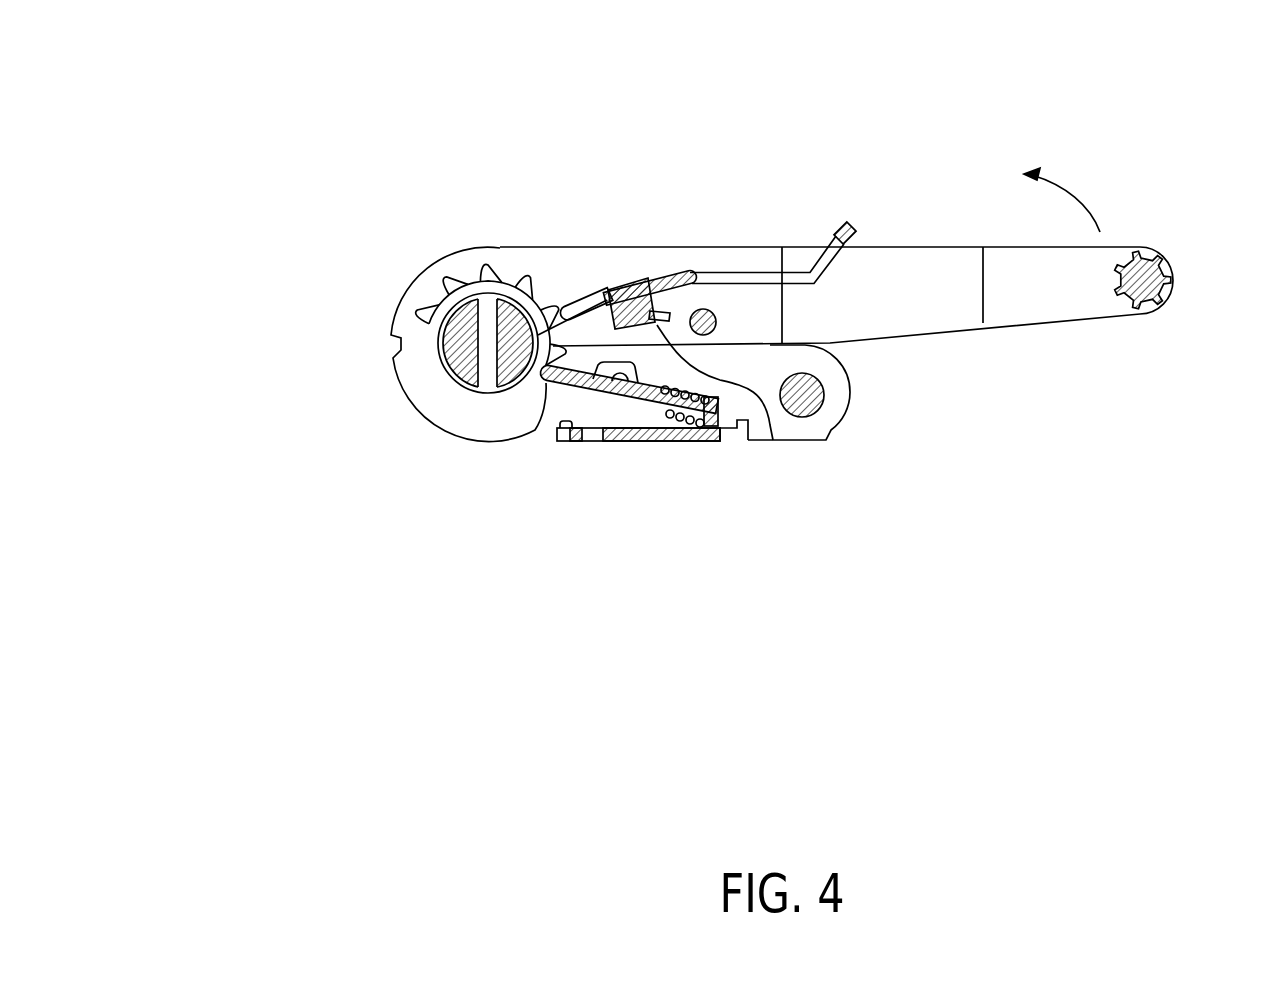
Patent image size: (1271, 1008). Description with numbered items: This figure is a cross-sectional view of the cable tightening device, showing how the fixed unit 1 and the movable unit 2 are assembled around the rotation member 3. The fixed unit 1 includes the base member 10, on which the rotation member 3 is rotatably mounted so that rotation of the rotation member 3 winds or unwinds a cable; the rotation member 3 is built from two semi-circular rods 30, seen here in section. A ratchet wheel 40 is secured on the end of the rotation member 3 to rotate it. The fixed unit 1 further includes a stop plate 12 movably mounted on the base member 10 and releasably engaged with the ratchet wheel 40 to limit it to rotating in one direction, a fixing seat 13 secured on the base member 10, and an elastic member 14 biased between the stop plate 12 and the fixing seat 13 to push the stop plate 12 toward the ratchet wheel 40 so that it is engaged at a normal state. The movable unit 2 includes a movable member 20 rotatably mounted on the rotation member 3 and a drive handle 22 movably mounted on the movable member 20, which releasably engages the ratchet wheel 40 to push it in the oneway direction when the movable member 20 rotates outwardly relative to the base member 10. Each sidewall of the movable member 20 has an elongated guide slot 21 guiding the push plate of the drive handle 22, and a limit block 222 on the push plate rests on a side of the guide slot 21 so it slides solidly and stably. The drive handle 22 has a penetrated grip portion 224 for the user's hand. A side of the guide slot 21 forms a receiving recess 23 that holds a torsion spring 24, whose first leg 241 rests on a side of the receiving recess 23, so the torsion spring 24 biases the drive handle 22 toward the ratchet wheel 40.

The fixed unit 1 is at (852, 413).
The base member 10 is at (833, 438).
The stop plate 12 is at (612, 379).
The fixing seat 13 is at (717, 443).
The elastic member 14 is at (647, 430).
The movable unit 2 is at (1170, 247).
The movable member 20 is at (1138, 315).
The guide slot 21 is at (545, 381).
The drive handle 22 is at (672, 272).
The limit block 222 is at (633, 278).
The grip portion 224 is at (843, 222).
The receiving recess 23 is at (562, 388).
The torsion spring 24 is at (565, 293).
The first leg 241 is at (770, 422).
The rotation member 3 is at (425, 371).
The semi-circular rod 30 is at (455, 335).
The ratchet wheel 40 is at (445, 288).